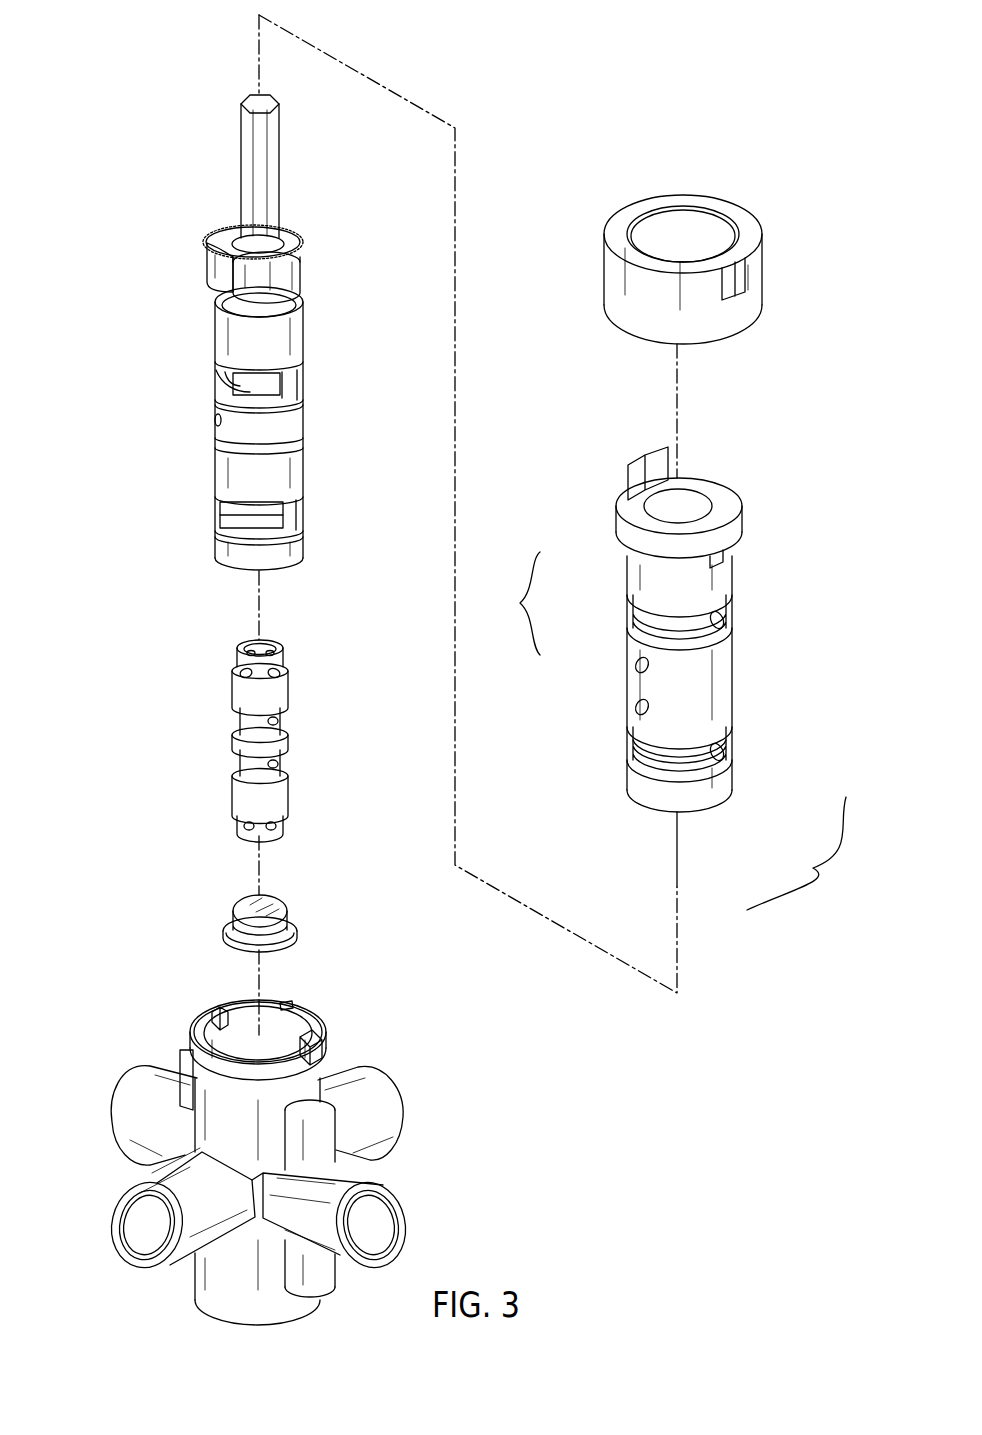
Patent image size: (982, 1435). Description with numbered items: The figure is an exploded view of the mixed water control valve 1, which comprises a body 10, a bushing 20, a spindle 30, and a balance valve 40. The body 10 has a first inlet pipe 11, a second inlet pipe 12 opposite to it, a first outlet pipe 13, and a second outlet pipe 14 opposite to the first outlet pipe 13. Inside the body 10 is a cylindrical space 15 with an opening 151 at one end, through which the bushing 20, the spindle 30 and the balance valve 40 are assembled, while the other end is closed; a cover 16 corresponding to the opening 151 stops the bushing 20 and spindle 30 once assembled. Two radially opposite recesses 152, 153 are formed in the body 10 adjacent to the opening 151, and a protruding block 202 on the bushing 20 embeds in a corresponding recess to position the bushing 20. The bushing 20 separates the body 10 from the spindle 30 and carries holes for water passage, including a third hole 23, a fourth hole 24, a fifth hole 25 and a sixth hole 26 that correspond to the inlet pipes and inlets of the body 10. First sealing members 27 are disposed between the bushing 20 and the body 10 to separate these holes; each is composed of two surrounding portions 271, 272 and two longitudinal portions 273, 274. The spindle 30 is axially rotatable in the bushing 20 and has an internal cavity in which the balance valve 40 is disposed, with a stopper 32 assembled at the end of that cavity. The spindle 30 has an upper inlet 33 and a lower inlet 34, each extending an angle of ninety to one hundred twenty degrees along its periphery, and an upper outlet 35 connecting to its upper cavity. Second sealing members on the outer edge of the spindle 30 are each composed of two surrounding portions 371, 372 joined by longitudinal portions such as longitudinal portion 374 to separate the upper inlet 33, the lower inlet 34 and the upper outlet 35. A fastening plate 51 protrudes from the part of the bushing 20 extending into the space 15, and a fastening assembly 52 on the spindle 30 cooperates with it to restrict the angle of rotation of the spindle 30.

The mixed water control valve 1 is at (578, 116).
The body 10 is at (208, 1283).
The first inlet pipe 11 is at (146, 1096).
The second inlet pipe 12 is at (380, 1213).
The first outlet pipe 13 is at (132, 1218).
The second outlet pipe 14 is at (390, 1126).
The space 15 is at (247, 1051).
The opening 151 is at (283, 1004).
The recess 152 is at (215, 1012).
The recess 153 is at (320, 1034).
The cover 16 is at (763, 265).
The bushing 20 is at (735, 682).
The protruding block 202 is at (733, 560).
The third hole 23 is at (722, 620).
The fourth hole 24 is at (724, 753).
The fifth hole 25 is at (637, 657).
The sixth hole 26 is at (637, 695).
The first sealing member 27 is at (667, 731).
The surrounding portion 271 is at (627, 595).
The surrounding portion 272 is at (633, 646).
The longitudinal portion 273 is at (633, 628).
The longitudinal portion 274 is at (679, 749).
The spindle 30 is at (290, 423).
The stopper 32 is at (245, 913).
The upper inlet 33 is at (236, 386).
The lower inlet 34 is at (297, 503).
The upper outlet 35 is at (218, 420).
The surrounding portion 371 is at (303, 360).
The surrounding portion 372 is at (303, 394).
The longitudinal portion 374 is at (302, 378).
The balance valve 40 is at (232, 722).
The fastening plate 51 is at (655, 468).
The fastening assembly 52 is at (300, 237).